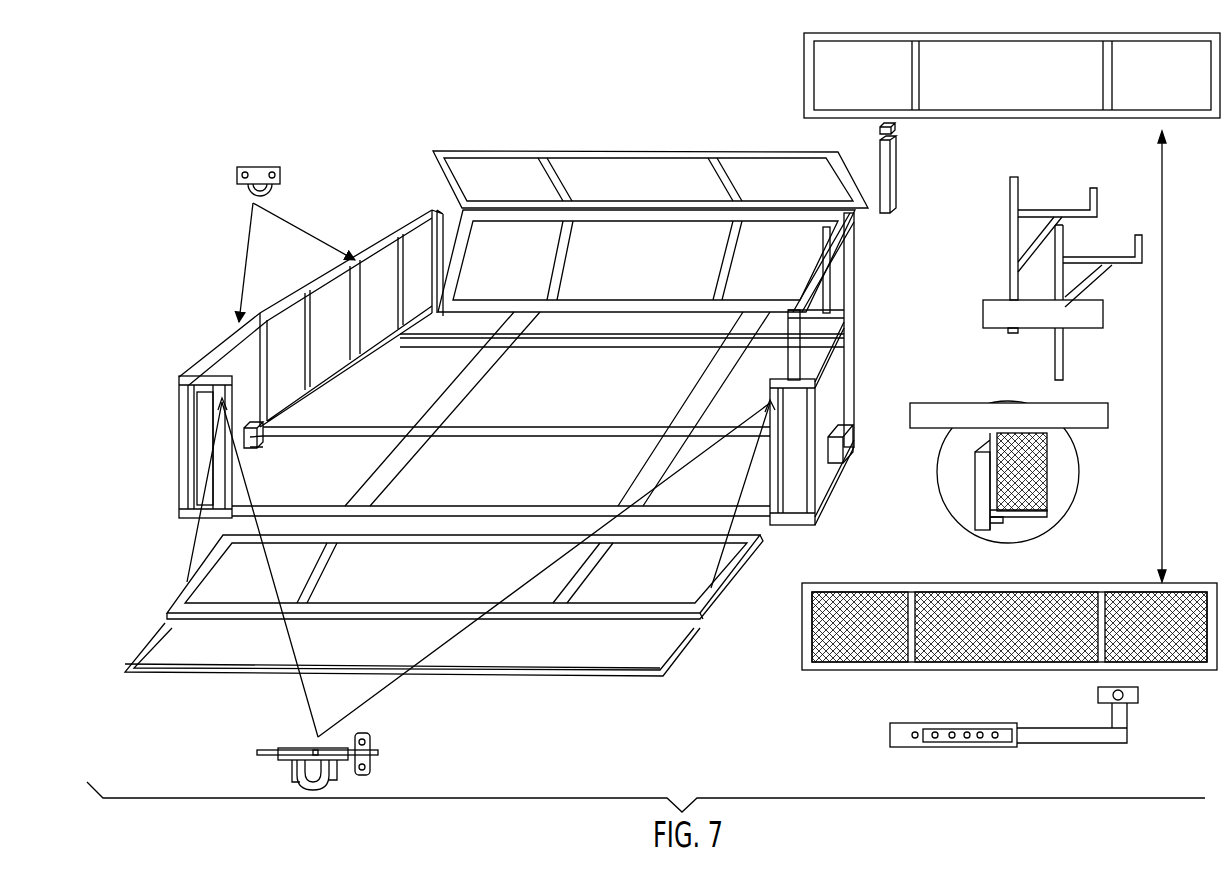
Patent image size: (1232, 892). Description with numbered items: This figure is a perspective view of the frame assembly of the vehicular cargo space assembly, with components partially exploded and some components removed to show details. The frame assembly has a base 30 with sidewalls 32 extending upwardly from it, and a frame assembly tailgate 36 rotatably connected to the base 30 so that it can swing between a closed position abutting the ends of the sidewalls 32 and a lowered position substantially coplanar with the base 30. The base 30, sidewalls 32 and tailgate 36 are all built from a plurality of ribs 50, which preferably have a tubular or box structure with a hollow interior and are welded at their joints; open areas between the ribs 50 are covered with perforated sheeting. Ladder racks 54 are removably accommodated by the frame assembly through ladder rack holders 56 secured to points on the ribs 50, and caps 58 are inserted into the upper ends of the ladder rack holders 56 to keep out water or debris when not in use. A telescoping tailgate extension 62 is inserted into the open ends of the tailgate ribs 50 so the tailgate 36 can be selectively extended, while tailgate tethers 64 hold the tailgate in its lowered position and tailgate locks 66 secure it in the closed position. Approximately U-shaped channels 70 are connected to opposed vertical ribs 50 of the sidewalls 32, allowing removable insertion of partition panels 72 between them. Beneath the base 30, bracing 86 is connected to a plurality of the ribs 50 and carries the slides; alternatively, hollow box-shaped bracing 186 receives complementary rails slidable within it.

The base 30 is at (513, 357).
The sidewalls 32 is at (289, 312).
The frame assembly tailgate 36 is at (333, 573).
The ribs 50 is at (467, 594).
The ladder racks 54 is at (1112, 253).
The ladder rack holders 56 is at (885, 162).
The caps 58 is at (894, 128).
The telescoping tailgate extension 62 is at (160, 678).
The tailgate tethers 64 is at (197, 517).
The tailgate locks 66 is at (333, 782).
The U-shaped channels 70 is at (987, 530).
The partition panels 72 is at (1182, 88).
The bracing 86 is at (538, 414).
The bracing 186 is at (689, 376).